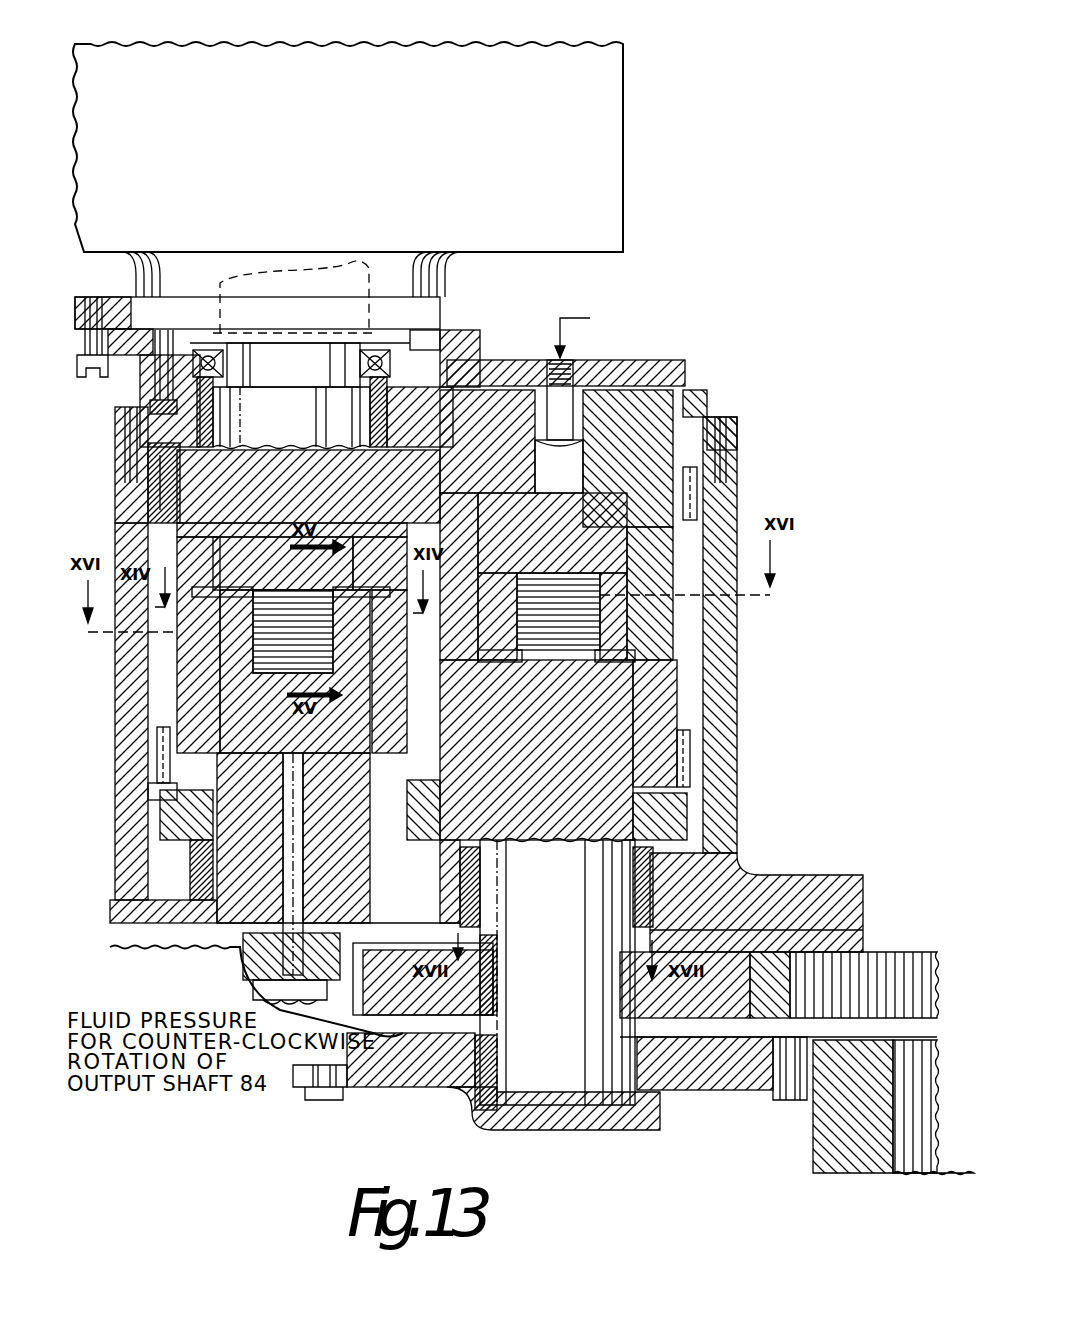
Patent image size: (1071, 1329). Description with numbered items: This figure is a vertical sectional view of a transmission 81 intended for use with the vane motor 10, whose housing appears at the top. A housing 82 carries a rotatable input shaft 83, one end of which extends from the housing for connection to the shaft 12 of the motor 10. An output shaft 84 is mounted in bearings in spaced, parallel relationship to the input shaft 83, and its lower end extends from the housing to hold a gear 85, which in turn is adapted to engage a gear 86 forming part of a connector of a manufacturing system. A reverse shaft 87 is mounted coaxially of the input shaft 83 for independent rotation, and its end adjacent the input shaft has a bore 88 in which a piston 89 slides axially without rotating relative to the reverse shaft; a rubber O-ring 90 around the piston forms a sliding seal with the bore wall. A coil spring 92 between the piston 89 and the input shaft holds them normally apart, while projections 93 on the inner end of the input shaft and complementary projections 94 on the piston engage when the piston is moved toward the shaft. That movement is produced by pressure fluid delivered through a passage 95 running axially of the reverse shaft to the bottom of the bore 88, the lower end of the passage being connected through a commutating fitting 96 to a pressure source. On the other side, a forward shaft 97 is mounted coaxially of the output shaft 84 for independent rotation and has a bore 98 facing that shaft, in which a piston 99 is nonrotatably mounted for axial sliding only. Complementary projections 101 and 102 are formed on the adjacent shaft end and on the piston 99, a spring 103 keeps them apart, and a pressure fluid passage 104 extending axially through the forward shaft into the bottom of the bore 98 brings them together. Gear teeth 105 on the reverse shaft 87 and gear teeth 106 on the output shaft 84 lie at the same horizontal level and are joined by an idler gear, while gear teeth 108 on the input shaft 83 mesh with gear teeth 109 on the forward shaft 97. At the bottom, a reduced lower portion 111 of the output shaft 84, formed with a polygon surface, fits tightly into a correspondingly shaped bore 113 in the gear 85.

The motor 10 is at (625, 132).
The shaft 12 is at (350, 265).
The transmission 81 is at (737, 690).
The housing 82 is at (115, 705).
The input shaft 83 is at (313, 430).
The output shaft 84 is at (571, 914).
The gear 85 is at (710, 952).
The gear 86 is at (900, 952).
The reverse shaft 87 is at (183, 650).
The bore 88 is at (227, 715).
The piston 89 is at (365, 717).
The rubber O-ring 90 is at (230, 660).
The coil spring 92 is at (272, 675).
The projections 93 is at (250, 590).
The complementary projections 94 is at (365, 620).
The passage 95 is at (290, 822).
The commutating fitting 96 is at (243, 970).
The forward shaft 97 is at (502, 399).
The bore 98 is at (627, 533).
The piston 99 is at (563, 506).
The projections 101 is at (510, 667).
The projections 102 is at (607, 633).
The spring 103 is at (573, 660).
The pressure fluid passage 104 is at (583, 437).
The gear teeth 105 is at (160, 753).
The gear teeth 106 is at (687, 760).
The gear teeth 108 is at (160, 495).
The gear teeth 109 is at (693, 503).
The reduced lower portion 111 is at (532, 960).
The bore 113 is at (497, 1000).